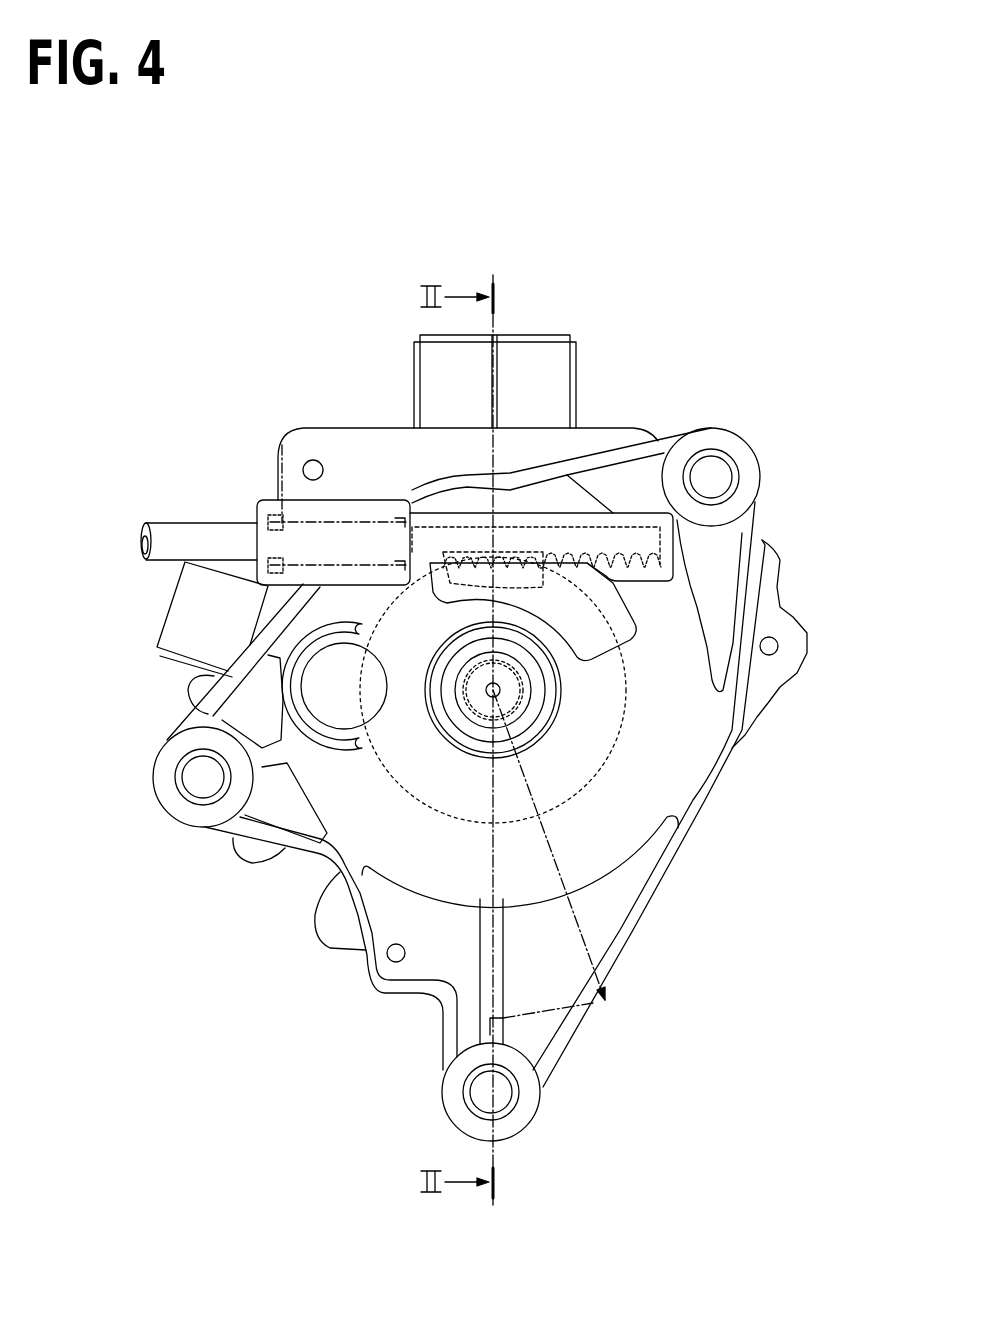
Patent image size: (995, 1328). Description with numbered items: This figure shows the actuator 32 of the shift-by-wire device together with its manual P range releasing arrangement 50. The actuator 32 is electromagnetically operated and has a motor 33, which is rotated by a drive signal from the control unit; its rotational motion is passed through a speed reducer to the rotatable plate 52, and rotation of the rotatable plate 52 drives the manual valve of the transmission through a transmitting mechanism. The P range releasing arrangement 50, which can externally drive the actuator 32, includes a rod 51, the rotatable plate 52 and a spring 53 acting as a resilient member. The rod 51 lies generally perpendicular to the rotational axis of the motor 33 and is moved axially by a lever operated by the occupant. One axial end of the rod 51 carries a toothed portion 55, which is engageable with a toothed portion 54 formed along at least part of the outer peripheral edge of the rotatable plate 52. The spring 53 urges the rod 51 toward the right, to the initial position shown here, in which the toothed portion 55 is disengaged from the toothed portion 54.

The actuator 32 is at (762, 546).
The motor 33 is at (640, 732).
The P range releasing arrangement 50 is at (255, 495).
The rod 51 is at (178, 522).
The rotatable plate 52 is at (593, 787).
The spring 53 is at (282, 442).
The toothed portion 54 is at (477, 553).
The toothed portion 55 is at (613, 583).